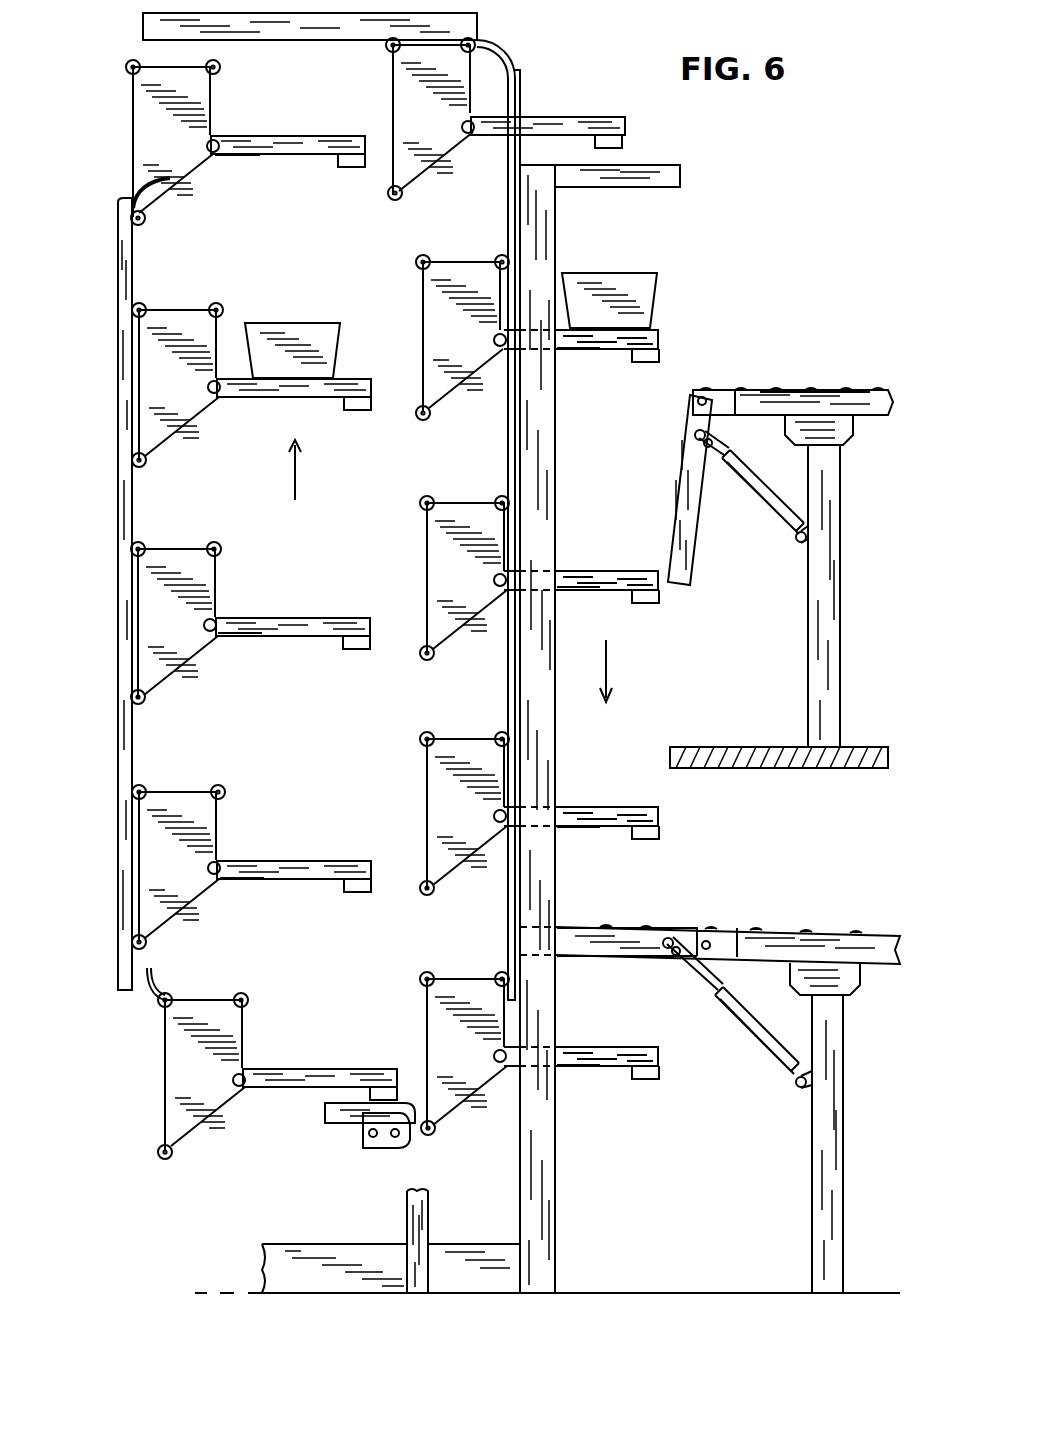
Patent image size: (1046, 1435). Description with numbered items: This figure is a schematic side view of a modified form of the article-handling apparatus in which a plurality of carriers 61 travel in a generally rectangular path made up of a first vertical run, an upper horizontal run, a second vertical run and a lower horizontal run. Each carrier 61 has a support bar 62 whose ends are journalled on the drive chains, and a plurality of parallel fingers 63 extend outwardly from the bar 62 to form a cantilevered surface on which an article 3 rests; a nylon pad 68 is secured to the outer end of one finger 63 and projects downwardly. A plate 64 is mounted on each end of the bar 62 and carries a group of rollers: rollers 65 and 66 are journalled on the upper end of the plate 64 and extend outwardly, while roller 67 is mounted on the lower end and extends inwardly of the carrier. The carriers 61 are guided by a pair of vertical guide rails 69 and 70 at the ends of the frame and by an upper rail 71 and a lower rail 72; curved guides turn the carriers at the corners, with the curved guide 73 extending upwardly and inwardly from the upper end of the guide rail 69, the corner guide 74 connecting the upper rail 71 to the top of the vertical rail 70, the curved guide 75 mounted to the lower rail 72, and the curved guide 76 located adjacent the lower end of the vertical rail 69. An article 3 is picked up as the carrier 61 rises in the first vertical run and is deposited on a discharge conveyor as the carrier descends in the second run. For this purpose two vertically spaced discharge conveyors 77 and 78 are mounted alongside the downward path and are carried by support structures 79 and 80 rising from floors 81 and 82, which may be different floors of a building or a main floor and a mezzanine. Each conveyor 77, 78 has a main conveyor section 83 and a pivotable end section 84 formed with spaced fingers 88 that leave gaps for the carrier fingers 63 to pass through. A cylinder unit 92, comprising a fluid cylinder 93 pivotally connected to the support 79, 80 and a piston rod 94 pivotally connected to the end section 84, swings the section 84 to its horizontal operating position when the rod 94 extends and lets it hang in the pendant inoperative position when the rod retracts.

The article 3 is at (308, 330).
The carrier 61 is at (284, 136).
The support bar 62 is at (470, 138).
The fingers 63 is at (258, 158).
The plate 64 is at (131, 134).
The roller 65 is at (126, 66).
The roller 66 is at (222, 68).
The roller 67 is at (128, 224).
The pad 68 is at (350, 170).
The vertical guide rail 69 is at (116, 508).
The vertical guide rail 70 is at (520, 466).
The upper guide rail 71 is at (336, 36).
The lower guide rail 72 is at (330, 1120).
The curved guide 73 is at (165, 190).
The corner guide 74 is at (494, 44).
The curved guide 75 is at (396, 1150).
The curved guide 76 is at (160, 980).
The discharge conveyor 77 is at (832, 388).
The discharge conveyor 78 is at (846, 930).
The support structure 79 is at (832, 590).
The support structure 80 is at (834, 1128).
The floor 81 is at (872, 745).
The floor 82 is at (880, 1290).
The main conveyor section 83 is at (782, 388).
The pivotable end section 84 is at (680, 452).
The fingers 88 is at (680, 556).
The cylinder unit 92 is at (752, 508).
The fluid cylinder 93 is at (752, 494).
The piston rod 94 is at (716, 444).